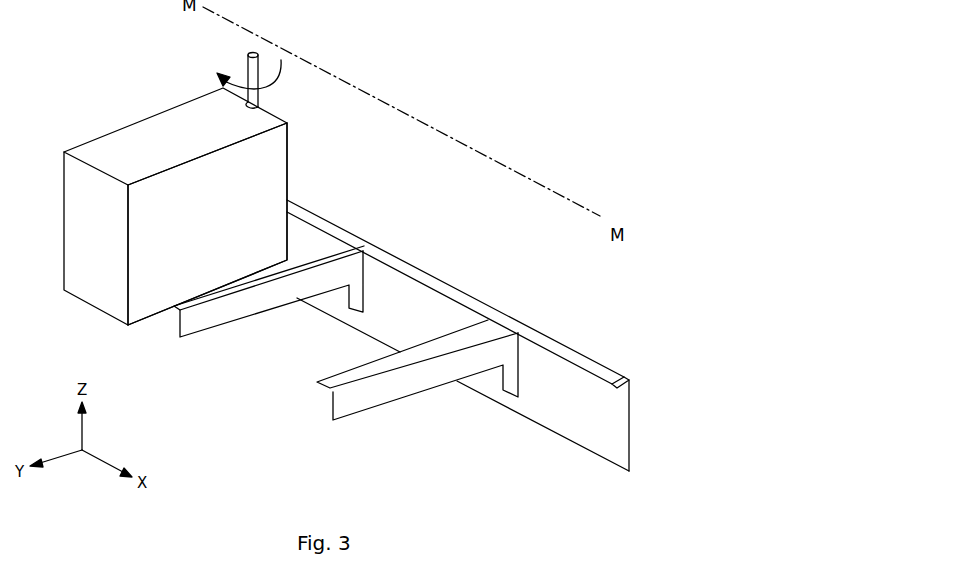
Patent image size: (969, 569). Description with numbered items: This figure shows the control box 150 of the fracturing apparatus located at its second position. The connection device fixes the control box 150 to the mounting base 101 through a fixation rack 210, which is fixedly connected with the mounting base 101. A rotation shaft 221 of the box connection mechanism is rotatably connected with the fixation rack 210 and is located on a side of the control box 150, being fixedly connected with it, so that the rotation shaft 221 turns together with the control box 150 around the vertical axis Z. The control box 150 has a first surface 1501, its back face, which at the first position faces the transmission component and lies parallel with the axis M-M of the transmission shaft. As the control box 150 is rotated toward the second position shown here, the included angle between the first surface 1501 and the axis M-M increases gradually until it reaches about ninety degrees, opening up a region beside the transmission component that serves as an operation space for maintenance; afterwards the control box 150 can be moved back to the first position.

The mounting base 101 is at (556, 337).
The control box 150 is at (138, 120).
The first surface 1501 is at (268, 195).
The fixation rack 210 is at (217, 318).
The rotation shaft 221 is at (254, 53).